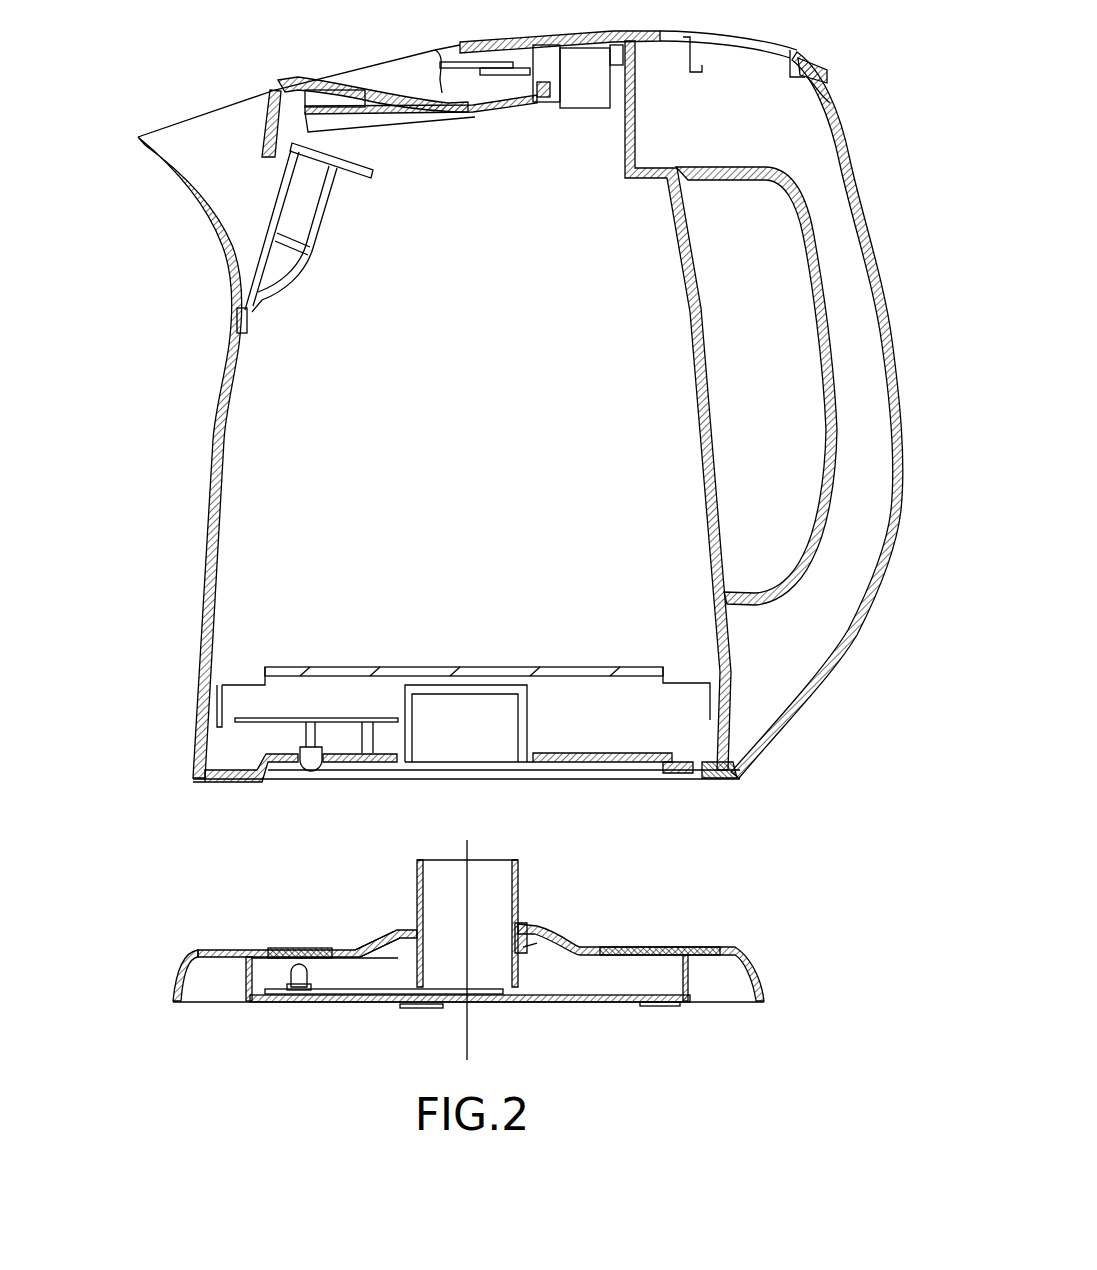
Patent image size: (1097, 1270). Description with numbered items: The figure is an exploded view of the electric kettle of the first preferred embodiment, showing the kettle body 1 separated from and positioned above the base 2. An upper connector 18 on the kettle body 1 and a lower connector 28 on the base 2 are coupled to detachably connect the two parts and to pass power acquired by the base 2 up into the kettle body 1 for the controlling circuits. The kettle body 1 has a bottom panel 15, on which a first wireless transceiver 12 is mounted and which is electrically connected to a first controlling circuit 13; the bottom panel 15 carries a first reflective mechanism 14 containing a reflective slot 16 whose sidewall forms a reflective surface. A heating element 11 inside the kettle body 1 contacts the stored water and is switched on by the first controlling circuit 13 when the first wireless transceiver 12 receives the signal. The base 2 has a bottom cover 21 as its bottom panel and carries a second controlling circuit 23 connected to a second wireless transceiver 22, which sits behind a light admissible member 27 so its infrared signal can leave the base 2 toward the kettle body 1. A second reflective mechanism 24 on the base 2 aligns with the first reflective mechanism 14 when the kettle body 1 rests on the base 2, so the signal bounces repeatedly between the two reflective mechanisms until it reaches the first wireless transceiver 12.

The kettle body 1 is at (205, 560).
The base 2 is at (193, 957).
The heating element 11 is at (490, 668).
The first wireless transceiver 12 is at (303, 752).
The first controlling circuit 13 is at (338, 720).
The first reflective mechanism 14 is at (622, 762).
The bottom panel 15 is at (253, 770).
The reflective slot 16 is at (413, 774).
The upper connector 18 is at (523, 693).
The bottom cover 21 is at (570, 1003).
The second wireless transceiver 22 is at (300, 972).
The second controlling circuit 23 is at (342, 1002).
The second reflective mechanism 24 is at (285, 950).
The light admissible member 27 is at (362, 946).
The lower connector 28 is at (520, 887).